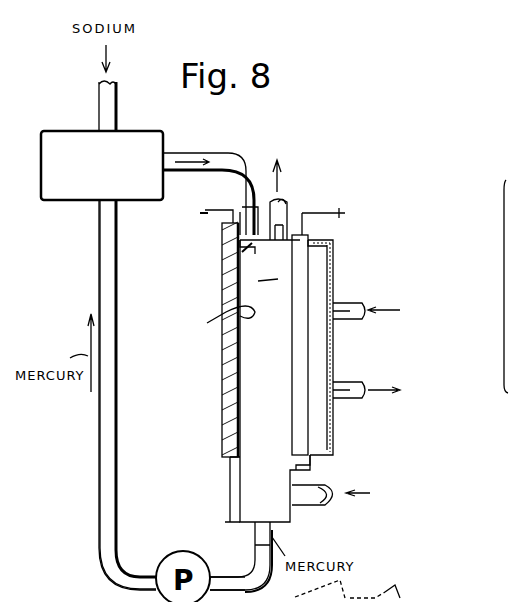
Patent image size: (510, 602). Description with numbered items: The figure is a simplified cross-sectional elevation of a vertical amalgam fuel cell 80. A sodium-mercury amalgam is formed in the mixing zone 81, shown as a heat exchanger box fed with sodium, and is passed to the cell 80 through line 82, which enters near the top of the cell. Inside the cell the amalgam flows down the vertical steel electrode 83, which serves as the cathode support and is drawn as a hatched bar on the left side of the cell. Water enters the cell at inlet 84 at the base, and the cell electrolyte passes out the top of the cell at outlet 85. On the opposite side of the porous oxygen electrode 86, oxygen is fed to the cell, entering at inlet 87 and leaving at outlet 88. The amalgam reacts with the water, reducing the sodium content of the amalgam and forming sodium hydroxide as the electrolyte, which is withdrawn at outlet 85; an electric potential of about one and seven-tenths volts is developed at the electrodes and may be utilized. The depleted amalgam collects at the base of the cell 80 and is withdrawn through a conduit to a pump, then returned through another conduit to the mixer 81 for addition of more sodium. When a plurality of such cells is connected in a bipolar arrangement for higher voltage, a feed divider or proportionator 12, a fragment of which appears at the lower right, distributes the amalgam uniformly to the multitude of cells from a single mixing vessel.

The feed divider or proportionator 12 is at (386, 589).
The vertical fuel cell 80 is at (230, 484).
The zone (mixer) 81 is at (78, 192).
The line 82 is at (238, 153).
The vertical steel electrode 83 is at (228, 388).
The water inlet 84 is at (318, 506).
The electrolyte outlet 85 is at (285, 218).
The porous oxygen electrode 86 is at (333, 352).
The oxygen inlet 87 is at (348, 302).
The oxygen outlet 88 is at (348, 355).